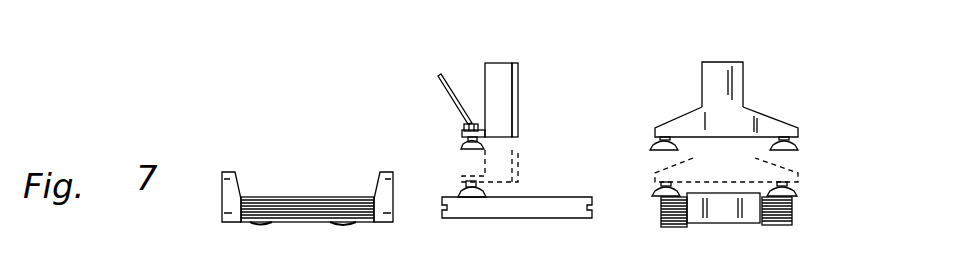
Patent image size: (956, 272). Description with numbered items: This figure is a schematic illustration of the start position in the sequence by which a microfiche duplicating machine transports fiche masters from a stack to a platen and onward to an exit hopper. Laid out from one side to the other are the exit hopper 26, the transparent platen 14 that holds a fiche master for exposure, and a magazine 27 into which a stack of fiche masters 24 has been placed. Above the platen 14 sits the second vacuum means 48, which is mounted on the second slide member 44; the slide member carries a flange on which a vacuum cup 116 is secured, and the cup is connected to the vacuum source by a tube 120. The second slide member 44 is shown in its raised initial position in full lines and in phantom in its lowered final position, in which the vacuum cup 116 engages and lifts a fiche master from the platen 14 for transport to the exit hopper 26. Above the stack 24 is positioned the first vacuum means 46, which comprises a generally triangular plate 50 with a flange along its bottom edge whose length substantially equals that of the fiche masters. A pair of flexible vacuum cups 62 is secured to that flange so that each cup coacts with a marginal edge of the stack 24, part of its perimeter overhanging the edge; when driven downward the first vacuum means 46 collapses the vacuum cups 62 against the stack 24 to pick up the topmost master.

The platen 14 is at (515, 210).
The stack of fiche masters 24 is at (788, 223).
The exit hopper 26 is at (292, 197).
The magazine 27 is at (710, 220).
The second slide member 44 is at (497, 76).
The first vacuum means 46 is at (745, 79).
The second vacuum means 48 is at (528, 98).
The triangular plate 50 is at (762, 118).
The vacuum cups 62 is at (800, 148).
The vacuum cup 116 is at (462, 146).
The tube 120 is at (451, 100).